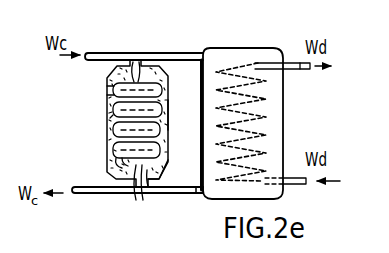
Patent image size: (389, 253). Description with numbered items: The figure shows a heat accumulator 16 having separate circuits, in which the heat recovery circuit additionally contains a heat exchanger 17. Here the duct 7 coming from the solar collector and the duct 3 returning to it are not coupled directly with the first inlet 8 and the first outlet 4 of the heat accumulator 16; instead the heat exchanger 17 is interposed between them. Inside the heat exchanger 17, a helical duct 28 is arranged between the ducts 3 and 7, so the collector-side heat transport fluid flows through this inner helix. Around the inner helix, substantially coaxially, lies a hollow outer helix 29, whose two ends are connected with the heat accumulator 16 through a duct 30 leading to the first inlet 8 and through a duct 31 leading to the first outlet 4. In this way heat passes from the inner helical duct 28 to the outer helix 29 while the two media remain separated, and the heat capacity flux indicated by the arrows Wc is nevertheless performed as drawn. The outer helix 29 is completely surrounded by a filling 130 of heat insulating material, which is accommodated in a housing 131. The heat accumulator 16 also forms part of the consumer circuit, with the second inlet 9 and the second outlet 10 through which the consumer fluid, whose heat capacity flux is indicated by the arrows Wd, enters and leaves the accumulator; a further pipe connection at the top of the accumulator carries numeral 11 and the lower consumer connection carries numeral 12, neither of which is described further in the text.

The duct 3 is at (72, 187).
The first outlet 4 is at (197, 193).
The duct 7 is at (113, 52).
The first inlet 8 is at (182, 56).
The second inlet 9 is at (287, 185).
The second outlet 10 is at (284, 60).
The outlet connection 11 is at (302, 70).
The inlet pipe 12 is at (301, 185).
The heat accumulator 16 is at (283, 133).
The heat exchanger 17 is at (104, 112).
The helical duct 28 is at (142, 198).
The hollow outer helix 29 is at (127, 166).
The duct 30 is at (169, 69).
The duct 31 is at (189, 187).
The filling of heat insulating material 130 is at (167, 116).
The housing 131 is at (100, 91).